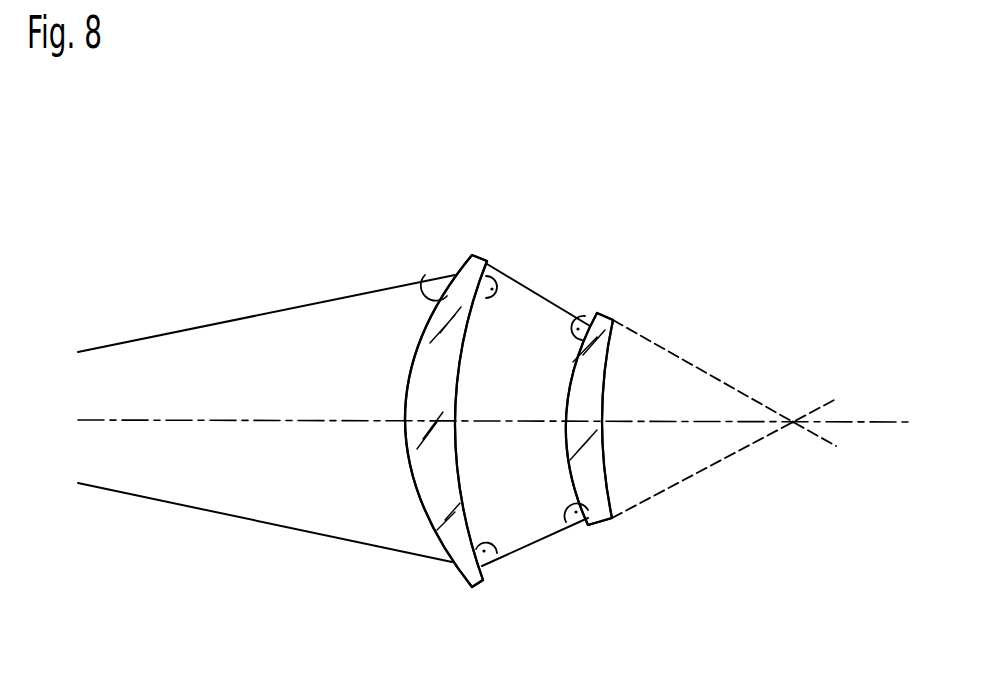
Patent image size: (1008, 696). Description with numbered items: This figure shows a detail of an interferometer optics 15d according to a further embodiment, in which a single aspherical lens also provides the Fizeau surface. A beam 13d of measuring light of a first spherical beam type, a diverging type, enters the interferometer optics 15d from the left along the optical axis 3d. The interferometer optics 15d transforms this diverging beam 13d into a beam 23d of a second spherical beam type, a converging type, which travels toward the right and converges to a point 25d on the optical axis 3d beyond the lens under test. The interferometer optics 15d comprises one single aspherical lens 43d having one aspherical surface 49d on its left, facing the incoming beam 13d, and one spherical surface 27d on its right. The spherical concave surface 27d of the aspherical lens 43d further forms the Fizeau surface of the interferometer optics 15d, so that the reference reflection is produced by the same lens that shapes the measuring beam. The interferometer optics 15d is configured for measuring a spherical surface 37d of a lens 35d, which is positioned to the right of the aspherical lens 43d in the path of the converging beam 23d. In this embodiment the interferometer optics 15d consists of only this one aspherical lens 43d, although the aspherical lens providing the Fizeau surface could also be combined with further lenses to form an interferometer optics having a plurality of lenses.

The optical axis 3d is at (895, 424).
The beam of measuring light 13d is at (249, 316).
The interferometer optics 15d is at (494, 200).
The beam of second spherical beam type 23d is at (528, 546).
The focal point / intermediate focus 25d is at (793, 424).
The spherical surface 27d is at (490, 268).
The lens 35d is at (603, 527).
The spherical surface 37d is at (587, 527).
The aspherical lens 43d is at (480, 585).
The aspherical surface 49d is at (425, 275).